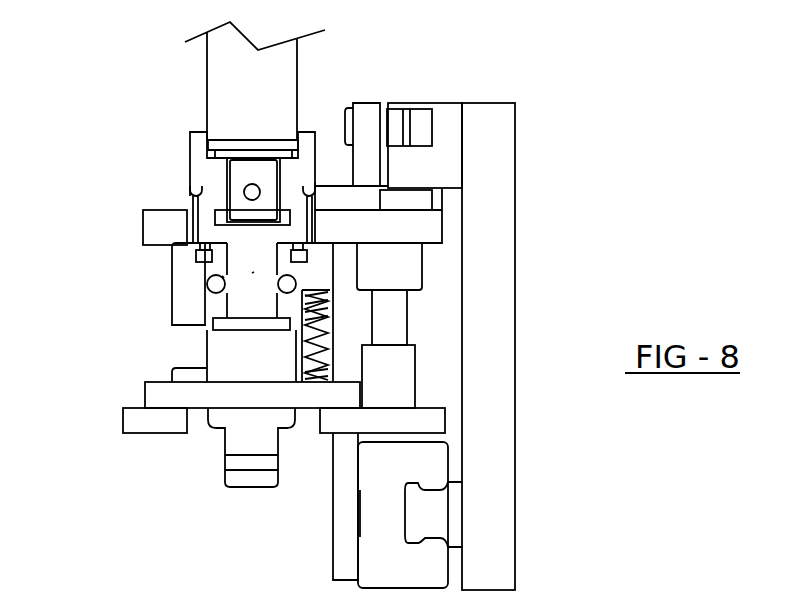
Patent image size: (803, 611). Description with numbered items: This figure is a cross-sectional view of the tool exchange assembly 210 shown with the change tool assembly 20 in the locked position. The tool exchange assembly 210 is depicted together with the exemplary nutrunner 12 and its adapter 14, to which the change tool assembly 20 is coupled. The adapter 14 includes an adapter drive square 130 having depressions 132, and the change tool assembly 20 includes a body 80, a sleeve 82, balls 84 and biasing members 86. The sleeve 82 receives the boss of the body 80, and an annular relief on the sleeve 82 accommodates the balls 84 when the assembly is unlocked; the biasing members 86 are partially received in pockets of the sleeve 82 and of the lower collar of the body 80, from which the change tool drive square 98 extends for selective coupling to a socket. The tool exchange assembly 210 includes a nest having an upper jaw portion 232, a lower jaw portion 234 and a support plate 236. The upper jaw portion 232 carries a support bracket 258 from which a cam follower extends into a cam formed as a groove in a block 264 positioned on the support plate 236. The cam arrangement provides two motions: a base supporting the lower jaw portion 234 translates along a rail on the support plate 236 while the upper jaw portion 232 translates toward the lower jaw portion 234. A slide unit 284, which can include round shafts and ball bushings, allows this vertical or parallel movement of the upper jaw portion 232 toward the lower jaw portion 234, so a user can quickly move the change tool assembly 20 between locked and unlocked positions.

The nutrunner 12 is at (245, 88).
The adapter 14 is at (200, 152).
The balls 84 is at (200, 193).
The upper jaw portion 232 is at (143, 221).
The sleeve 82 is at (185, 310).
The change tool assembly 20 is at (163, 330).
The biasing members 86 is at (333, 346).
The depressions 132 is at (222, 276).
The adapter drive square 130 is at (252, 273).
The body 80 is at (243, 368).
The change tool drive square 98 is at (253, 448).
The lower jaw portion 234 is at (120, 420).
The slide unit 284 is at (405, 293).
The support bracket 258 is at (370, 118).
The block 264 is at (445, 112).
The support plate 236 is at (493, 142).
The tool exchange assembly 210 is at (530, 244).